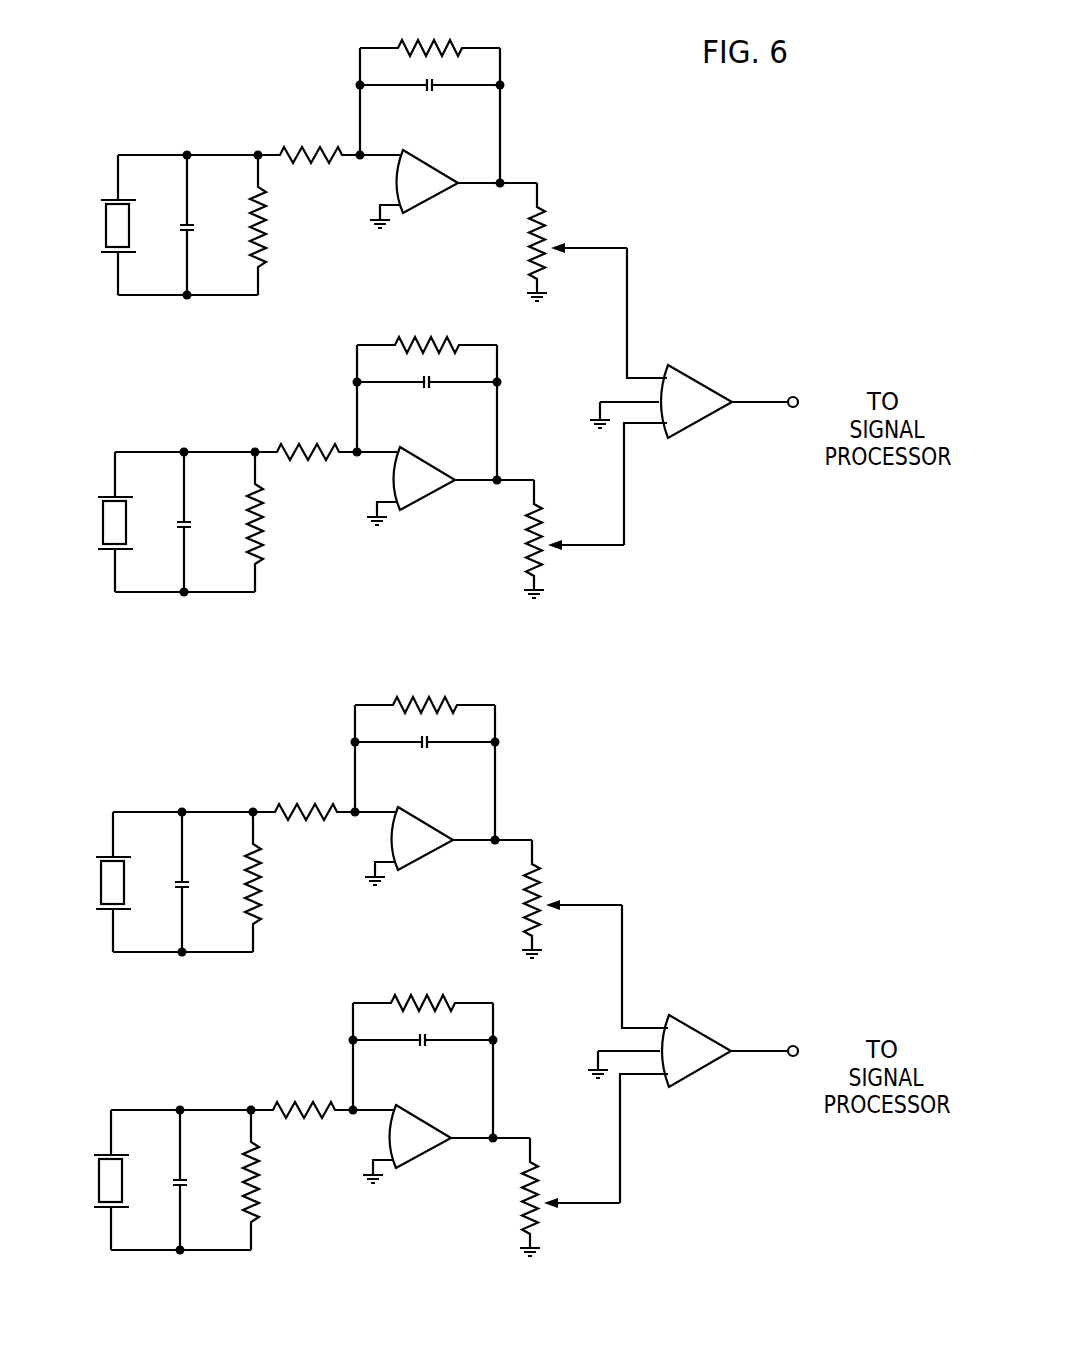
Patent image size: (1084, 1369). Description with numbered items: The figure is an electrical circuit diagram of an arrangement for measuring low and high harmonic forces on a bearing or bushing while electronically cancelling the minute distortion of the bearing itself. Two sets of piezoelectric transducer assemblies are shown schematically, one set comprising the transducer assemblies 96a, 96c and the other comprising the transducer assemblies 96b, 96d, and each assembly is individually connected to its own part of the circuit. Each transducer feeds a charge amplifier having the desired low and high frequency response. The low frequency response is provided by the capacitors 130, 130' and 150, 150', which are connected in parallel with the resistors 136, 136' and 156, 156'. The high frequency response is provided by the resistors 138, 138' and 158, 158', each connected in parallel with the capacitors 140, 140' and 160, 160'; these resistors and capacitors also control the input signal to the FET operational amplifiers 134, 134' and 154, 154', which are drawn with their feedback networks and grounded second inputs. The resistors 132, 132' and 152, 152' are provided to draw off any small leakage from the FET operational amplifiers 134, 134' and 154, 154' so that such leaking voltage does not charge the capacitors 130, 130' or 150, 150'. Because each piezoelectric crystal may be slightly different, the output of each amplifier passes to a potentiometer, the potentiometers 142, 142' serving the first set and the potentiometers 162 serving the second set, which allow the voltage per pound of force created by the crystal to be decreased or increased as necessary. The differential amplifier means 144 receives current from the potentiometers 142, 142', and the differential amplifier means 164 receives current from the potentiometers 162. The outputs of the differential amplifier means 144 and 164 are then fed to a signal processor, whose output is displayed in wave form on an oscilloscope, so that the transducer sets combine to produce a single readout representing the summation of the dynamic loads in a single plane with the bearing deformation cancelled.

The piezoelectric transducer assembly 96a is at (102, 228).
The piezoelectric transducer assembly 96b is at (84, 882).
The piezoelectric transducer assembly 96c is at (86, 522).
The piezoelectric transducer assembly 96d is at (82, 1180).
The capacitor 130 is at (212, 225).
The capacitor 130' is at (212, 522).
The resistor 132 is at (288, 225).
The resistor 132' is at (288, 522).
The FET operational amplifier 134 is at (448, 189).
The FET operational amplifier 134' is at (445, 486).
The resistor 136 is at (311, 137).
The resistor 136' is at (311, 434).
The resistor 138 is at (437, 31).
The resistor 138' is at (437, 328).
The capacitor 140 is at (434, 73).
The capacitor 140' is at (434, 370).
The potentiometer 142 is at (577, 242).
The potentiometer 142' is at (575, 539).
The differential amplifier means 144 is at (688, 380).
The capacitor 150 is at (207, 882).
The capacitor 150' is at (208, 1180).
The resistor 152 is at (283, 882).
The resistor 152' is at (284, 1180).
The FET operational amplifier 154 is at (443, 846).
The FET operational amplifier 154' is at (441, 1144).
The resistor 156 is at (306, 794).
The resistor 156' is at (307, 1092).
The resistor 158 is at (432, 688).
The resistor 158' is at (433, 986).
The capacitor 160 is at (429, 730).
The capacitor 160' is at (430, 1028).
The potentiometer 162 is at (573, 1048).
The differential amplifier means 164 is at (690, 1028).